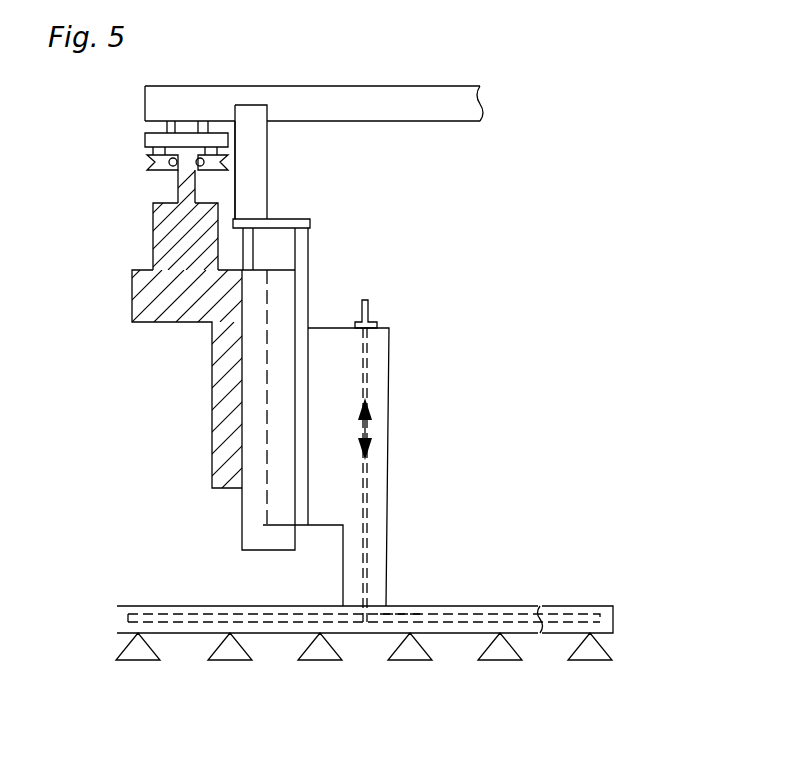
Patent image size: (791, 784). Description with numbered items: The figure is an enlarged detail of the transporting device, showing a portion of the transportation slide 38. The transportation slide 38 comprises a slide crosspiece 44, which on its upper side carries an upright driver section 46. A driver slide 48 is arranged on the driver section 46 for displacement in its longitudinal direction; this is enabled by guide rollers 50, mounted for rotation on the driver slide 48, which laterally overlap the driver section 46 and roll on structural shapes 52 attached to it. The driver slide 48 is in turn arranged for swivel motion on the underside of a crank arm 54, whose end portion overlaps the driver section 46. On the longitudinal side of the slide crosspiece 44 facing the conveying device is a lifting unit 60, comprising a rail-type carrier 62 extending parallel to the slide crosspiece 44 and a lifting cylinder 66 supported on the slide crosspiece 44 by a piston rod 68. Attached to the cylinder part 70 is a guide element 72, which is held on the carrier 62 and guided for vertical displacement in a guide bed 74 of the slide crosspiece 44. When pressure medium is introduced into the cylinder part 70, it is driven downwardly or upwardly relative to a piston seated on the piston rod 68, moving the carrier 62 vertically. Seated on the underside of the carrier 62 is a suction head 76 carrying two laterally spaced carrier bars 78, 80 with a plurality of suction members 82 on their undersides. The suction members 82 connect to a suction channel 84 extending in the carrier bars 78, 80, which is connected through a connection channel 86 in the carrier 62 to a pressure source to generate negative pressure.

The transportation slide 38 is at (126, 311).
The slide crosspiece 44 is at (132, 288).
The driver section 46 is at (178, 188).
The driver slide 48 is at (150, 135).
The guide rollers 50 is at (148, 167).
The structural shapes 52 is at (200, 150).
The crank arm 54 is at (212, 105).
The lifting unit 60 is at (319, 326).
The rail-type carrier 62 is at (377, 345).
The lifting cylinder 66 is at (270, 142).
The piston rod 68 is at (277, 230).
The cylinder part 70 is at (255, 118).
The guide element 72 is at (310, 250).
The guide bed 74 is at (262, 535).
The suction head 76 is at (492, 603).
The carrier bar 78 is at (545, 607).
The carrier bar 80 is at (391, 589).
The suction members 82 is at (510, 655).
The suction channel 84 is at (400, 615).
The connection channel 86 is at (365, 383).